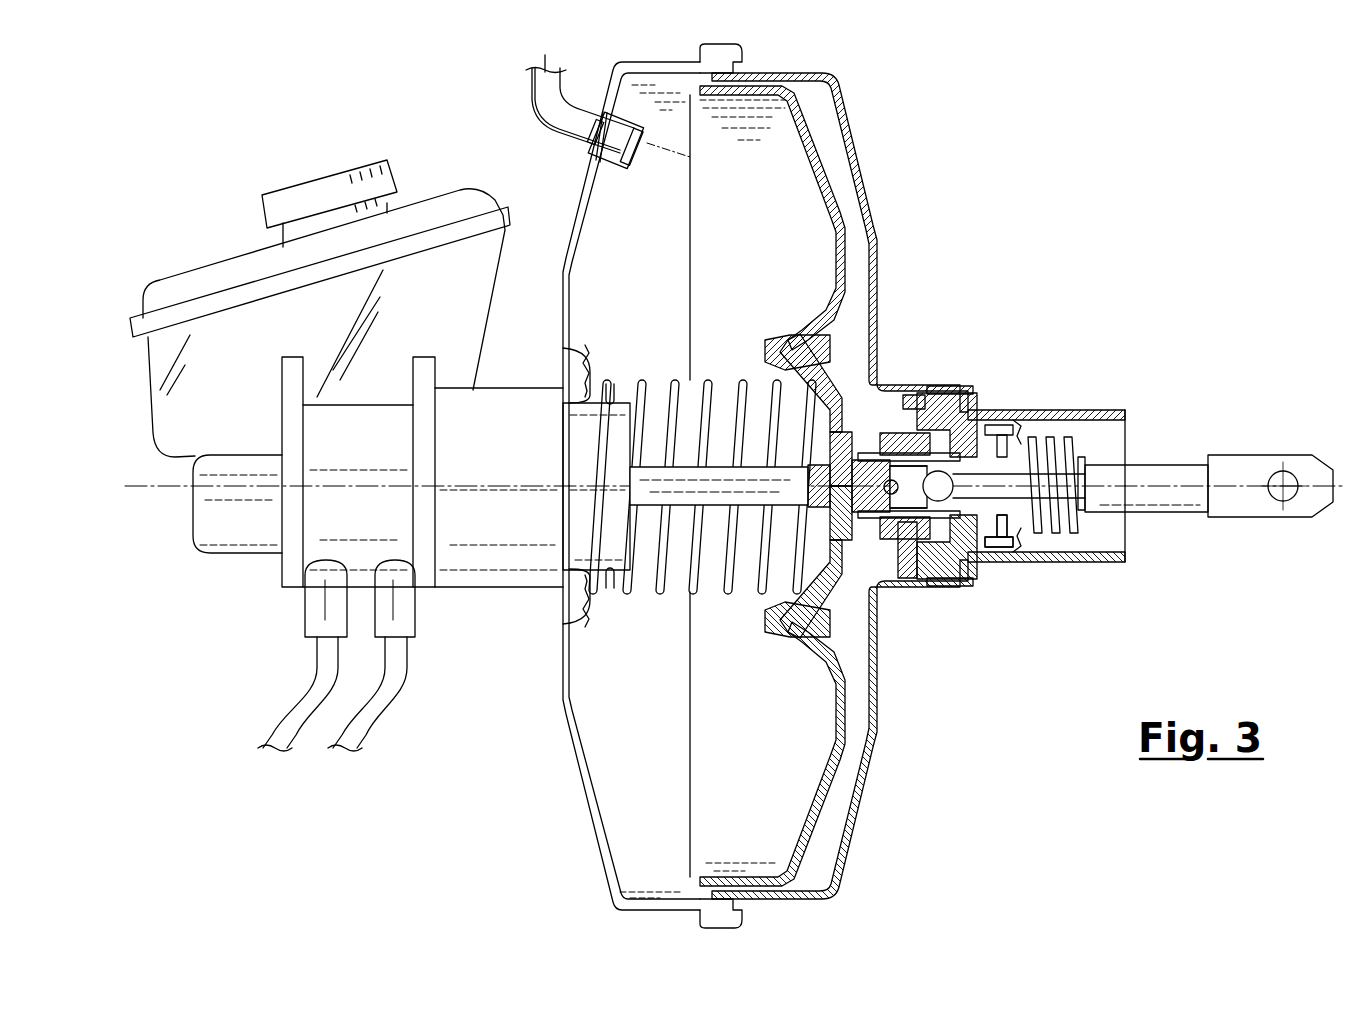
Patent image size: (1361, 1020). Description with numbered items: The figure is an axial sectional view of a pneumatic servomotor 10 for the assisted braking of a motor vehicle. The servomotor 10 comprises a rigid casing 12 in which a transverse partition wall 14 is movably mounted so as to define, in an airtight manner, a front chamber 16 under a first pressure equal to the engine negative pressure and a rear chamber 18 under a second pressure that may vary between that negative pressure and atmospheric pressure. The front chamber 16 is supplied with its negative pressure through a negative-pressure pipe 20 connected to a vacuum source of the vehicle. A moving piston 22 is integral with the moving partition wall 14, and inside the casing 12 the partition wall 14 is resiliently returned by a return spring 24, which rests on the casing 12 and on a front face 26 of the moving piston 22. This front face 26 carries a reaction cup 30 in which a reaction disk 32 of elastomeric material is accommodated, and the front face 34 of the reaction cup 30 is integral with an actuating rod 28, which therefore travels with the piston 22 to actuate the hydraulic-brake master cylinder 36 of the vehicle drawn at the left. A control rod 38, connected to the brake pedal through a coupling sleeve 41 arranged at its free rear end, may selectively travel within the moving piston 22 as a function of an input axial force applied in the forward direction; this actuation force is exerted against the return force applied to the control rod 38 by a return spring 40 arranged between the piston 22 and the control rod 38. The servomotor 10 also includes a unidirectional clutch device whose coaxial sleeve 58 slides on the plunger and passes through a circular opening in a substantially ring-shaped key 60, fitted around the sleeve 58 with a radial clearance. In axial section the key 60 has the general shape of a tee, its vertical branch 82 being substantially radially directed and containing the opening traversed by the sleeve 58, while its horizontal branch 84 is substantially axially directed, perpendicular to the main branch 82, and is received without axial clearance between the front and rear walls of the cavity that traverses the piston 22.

The pneumatic servomotor 10 is at (1054, 236).
The rigid casing 12 is at (873, 297).
The transverse partition wall 14 is at (828, 180).
The front chamber 16 is at (779, 218).
The rear chamber 18 is at (857, 670).
The negative-pressure pipe 20 is at (533, 97).
The moving piston 22 is at (895, 445).
The return spring 24 is at (678, 587).
The front face of the moving piston 26 is at (848, 400).
The actuating rod 28 is at (652, 490).
The reaction cup 30 is at (840, 445).
The reaction disk 32 is at (822, 460).
The front face of the reaction cup 34 is at (822, 517).
The hydraulic-brake master cylinder 36 is at (333, 513).
The control rod 38 is at (1197, 495).
The return spring 40 is at (1063, 527).
The coupling sleeve 41 is at (1238, 465).
The coaxial sleeve 58 is at (970, 563).
The key 60 is at (925, 562).
The vertical branch 82 is at (905, 572).
The horizontal branch 84 is at (927, 373).